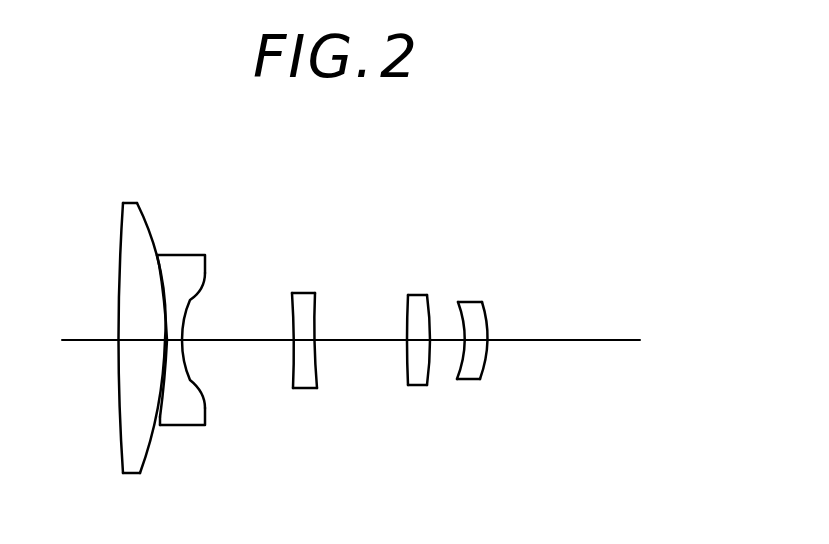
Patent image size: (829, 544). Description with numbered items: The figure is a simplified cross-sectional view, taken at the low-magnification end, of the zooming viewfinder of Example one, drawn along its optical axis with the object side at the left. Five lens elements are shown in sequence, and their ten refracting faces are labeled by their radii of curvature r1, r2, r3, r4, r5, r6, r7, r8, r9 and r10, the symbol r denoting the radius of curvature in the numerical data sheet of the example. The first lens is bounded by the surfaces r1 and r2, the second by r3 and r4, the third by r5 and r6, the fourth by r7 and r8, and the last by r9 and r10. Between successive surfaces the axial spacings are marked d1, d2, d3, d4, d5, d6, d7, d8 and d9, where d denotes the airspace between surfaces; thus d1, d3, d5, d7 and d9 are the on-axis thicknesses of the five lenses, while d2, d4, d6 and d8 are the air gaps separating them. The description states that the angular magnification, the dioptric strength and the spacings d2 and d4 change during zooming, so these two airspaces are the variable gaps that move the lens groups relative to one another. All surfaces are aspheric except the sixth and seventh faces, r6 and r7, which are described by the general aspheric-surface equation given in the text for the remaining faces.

The radius of curvature of first surface r1 is at (119, 220).
The radius of curvature of second surface r2 is at (140, 222).
The radius of curvature of third surface r3 is at (156, 254).
The radius of curvature of fourth surface r4 is at (204, 274).
The radius of curvature of fifth surface r5 is at (291, 296).
The radius of curvature of sixth surface r6 is at (317, 299).
The radius of curvature of seventh surface r7 is at (407, 298).
The radius of curvature of eighth surface r8 is at (428, 302).
The radius of curvature of ninth surface r9 is at (461, 303).
The radius of curvature of tenth surface r10 is at (486, 304).
The first axial distance d1 is at (133, 340).
The second axial distance d2 is at (165, 345).
The third axial distance d3 is at (178, 342).
The fourth axial distance d4 is at (250, 342).
The fifth axial distance d5 is at (303, 389).
The sixth axial distance d6 is at (358, 342).
The seventh axial distance d7 is at (413, 386).
The eighth axial distance d8 is at (447, 342).
The ninth axial distance d9 is at (471, 380).